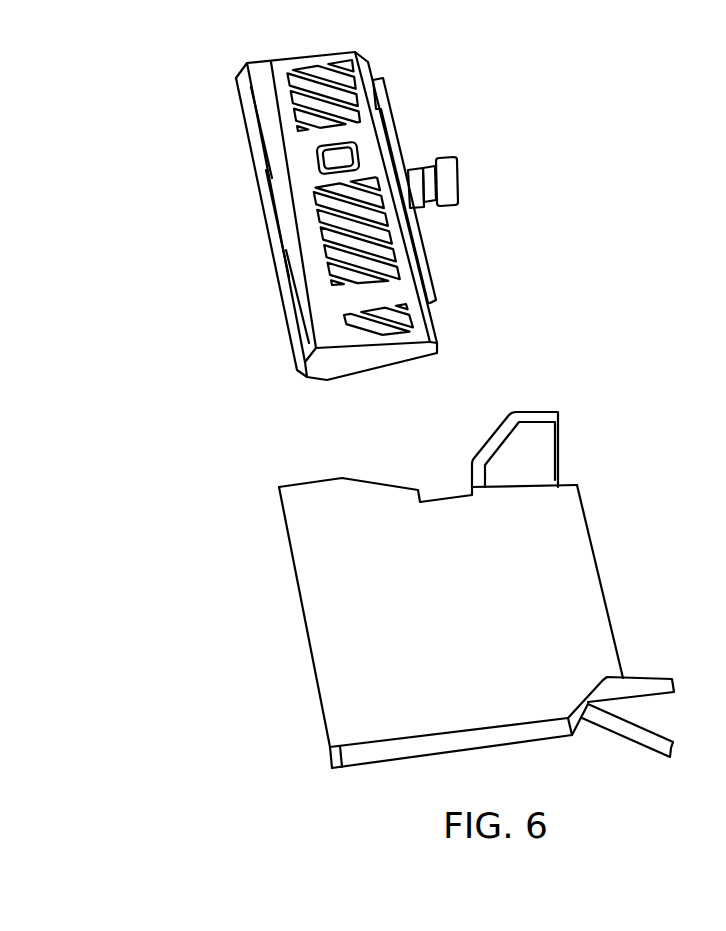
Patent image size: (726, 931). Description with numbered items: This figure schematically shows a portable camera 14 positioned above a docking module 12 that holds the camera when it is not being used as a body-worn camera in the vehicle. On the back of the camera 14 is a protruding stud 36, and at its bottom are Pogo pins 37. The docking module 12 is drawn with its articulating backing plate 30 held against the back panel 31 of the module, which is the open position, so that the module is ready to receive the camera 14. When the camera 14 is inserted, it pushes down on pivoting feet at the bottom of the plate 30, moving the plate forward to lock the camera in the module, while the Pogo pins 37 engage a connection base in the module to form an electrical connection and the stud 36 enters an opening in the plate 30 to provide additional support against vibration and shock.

The camera 14 is at (270, 263).
The protruding stud 36 is at (458, 182).
The Pogo pins 37 is at (390, 360).
The docking module 12 is at (568, 543).
The articulating backing plate 30 is at (542, 445).
The back panel 31 is at (603, 583).